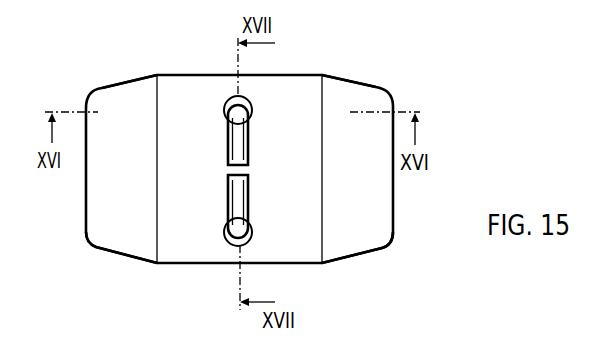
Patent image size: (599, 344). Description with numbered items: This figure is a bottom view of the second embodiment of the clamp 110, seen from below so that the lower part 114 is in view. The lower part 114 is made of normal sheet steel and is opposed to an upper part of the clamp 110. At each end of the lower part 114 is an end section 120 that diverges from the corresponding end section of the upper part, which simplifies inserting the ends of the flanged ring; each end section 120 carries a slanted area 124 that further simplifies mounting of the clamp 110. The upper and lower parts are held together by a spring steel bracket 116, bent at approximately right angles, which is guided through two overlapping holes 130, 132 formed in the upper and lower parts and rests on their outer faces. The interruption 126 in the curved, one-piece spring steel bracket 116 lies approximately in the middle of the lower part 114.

The clamp 110 is at (279, 68).
The slanted area 124 is at (112, 88).
The end section 120 is at (103, 215).
The lower part 114 is at (310, 178).
The spring steel bracket 116 is at (244, 136).
The hole 132 is at (227, 100).
The interruption 126 is at (240, 175).
The hole 130 is at (234, 246).